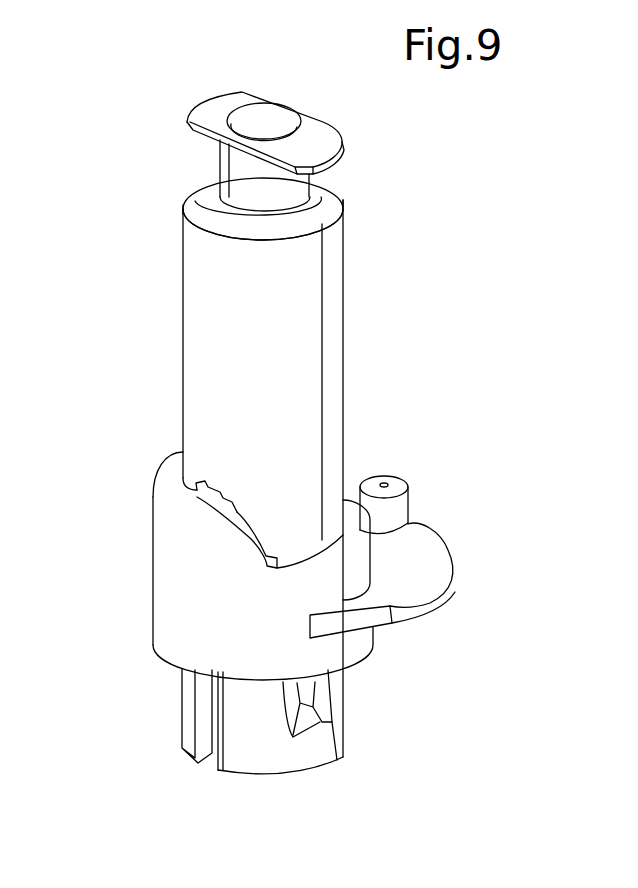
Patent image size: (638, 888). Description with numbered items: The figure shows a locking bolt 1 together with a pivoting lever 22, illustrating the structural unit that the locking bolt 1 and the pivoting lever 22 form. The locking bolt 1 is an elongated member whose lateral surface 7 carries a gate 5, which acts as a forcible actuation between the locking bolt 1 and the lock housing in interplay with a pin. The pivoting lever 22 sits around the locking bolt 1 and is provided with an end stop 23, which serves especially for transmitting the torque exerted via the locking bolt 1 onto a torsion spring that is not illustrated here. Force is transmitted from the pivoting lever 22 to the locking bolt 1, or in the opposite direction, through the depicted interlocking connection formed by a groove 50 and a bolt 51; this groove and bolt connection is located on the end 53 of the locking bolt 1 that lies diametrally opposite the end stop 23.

The locking bolt 1 is at (308, 353).
The lateral surface 7 is at (303, 405).
The end of the locking bolt 53 is at (217, 425).
The groove 50 is at (190, 489).
The bolt 51 is at (210, 498).
The end stop 23 is at (393, 510).
The pivoting lever 22 is at (422, 573).
The gate 5 is at (328, 703).